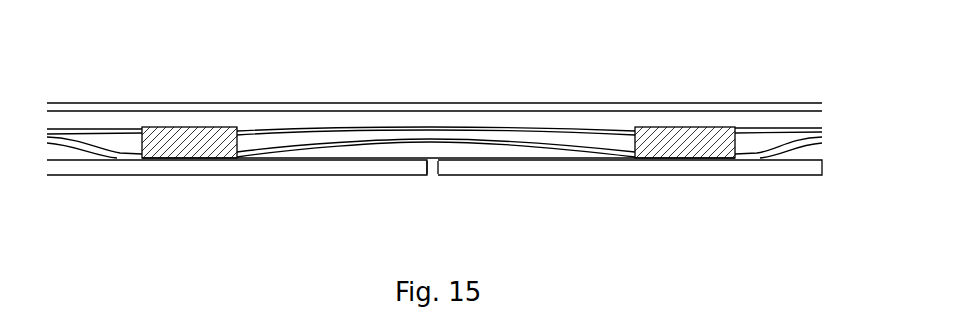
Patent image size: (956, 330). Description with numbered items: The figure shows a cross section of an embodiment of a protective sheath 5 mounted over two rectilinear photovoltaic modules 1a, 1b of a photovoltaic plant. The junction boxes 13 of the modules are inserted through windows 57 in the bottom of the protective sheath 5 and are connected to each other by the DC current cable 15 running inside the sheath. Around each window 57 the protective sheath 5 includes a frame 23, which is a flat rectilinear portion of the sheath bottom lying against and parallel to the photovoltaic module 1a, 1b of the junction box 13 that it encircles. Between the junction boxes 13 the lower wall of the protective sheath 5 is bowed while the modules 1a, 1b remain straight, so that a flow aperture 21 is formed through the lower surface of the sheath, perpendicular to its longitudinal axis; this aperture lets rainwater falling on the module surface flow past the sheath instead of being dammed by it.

The photovoltaic module 1a is at (355, 179).
The photovoltaic module 1b is at (527, 178).
The protective sheath 5 is at (396, 163).
The flow aperture 21 is at (432, 161).
The DC current cable 15 is at (278, 161).
The junction box 13 is at (190, 127).
The window 57 is at (140, 132).
The frame 23 is at (127, 162).